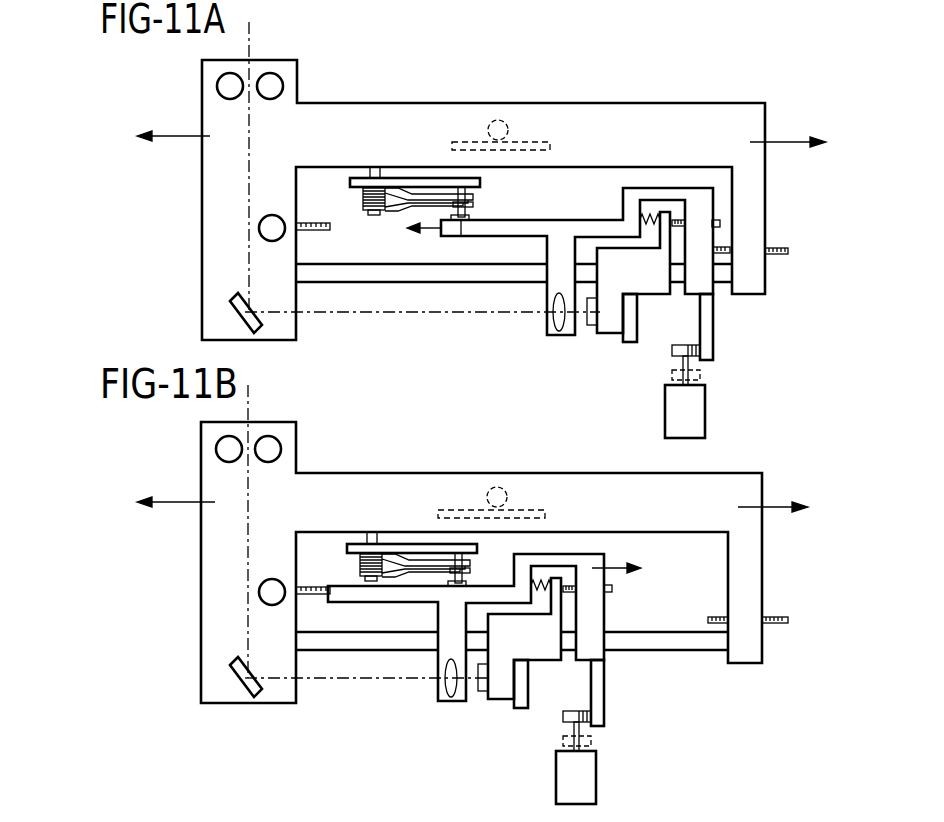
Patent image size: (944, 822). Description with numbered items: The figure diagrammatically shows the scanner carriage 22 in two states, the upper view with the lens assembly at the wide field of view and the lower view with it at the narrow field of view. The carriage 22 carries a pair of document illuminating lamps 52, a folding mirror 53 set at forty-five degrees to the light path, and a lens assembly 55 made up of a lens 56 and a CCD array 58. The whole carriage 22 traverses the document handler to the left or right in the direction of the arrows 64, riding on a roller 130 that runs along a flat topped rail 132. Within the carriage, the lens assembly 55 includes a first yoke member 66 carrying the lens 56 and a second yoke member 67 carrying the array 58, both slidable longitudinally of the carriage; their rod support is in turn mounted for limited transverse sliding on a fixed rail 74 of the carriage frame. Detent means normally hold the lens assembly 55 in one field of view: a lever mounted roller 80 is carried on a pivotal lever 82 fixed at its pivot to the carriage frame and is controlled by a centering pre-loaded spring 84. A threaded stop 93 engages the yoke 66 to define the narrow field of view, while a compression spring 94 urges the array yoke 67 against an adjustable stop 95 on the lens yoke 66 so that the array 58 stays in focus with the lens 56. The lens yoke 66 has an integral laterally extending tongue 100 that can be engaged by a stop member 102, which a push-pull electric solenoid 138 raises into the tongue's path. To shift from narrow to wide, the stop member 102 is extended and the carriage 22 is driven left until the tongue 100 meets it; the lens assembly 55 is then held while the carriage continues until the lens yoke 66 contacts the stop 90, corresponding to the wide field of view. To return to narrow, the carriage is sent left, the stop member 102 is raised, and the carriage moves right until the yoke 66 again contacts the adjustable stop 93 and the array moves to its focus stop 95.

In FIG. 11A, the carriage 22 is at (450, 91).
In FIG. 11B, the carriage 22 is at (412, 461).
In FIG. 11A, the document illuminating lamps 52 is at (218, 87).
In FIG. 11B, the document illuminating lamps 52 is at (217, 449).
In FIG. 11A, the folding mirror 53 is at (236, 318).
In FIG. 11B, the folding mirror 53 is at (241, 690).
In FIG. 11A, the lens assembly 55 is at (537, 329).
In FIG. 11B, the lens assembly 55 is at (424, 708).
In FIG. 11A, the lens 56 is at (556, 330).
In FIG. 11B, the lens 56 is at (449, 698).
In FIG. 11A, the CCD array 58 is at (631, 343).
In FIG. 11B, the CCD array 58 is at (521, 712).
In FIG. 11A, the arrows 64 is at (192, 139).
In FIG. 11B, the arrows 64 is at (186, 503).
In FIG. 11A, the first yoke member 66 is at (562, 240).
In FIG. 11B, the first yoke member 66 is at (483, 596).
In FIG. 11A, the second yoke member 67 is at (608, 333).
In FIG. 11B, the second yoke member 67 is at (497, 700).
In FIG. 11A, the fixed rail 74 is at (262, 229).
In FIG. 11B, the fixed rail 74 is at (262, 594).
In FIG. 11A, the lever mounted roller 80 is at (459, 231).
In FIG. 11B, the lever mounted roller 80 is at (460, 591).
In FIG. 11A, the pivotal lever 82 is at (426, 180).
In FIG. 11B, the pivotal lever 82 is at (420, 545).
In FIG. 11A, the centering pre-loaded spring 84 is at (358, 203).
In FIG. 11B, the centering pre-loaded spring 84 is at (356, 569).
In FIG. 11A, the stop 90 is at (771, 255).
In FIG. 11B, the stop 90 is at (777, 625).
In FIG. 11A, the threaded stop 93 is at (317, 232).
In FIG. 11B, the threaded stop 93 is at (309, 595).
In FIG. 11A, the compression spring 94 is at (651, 214).
In FIG. 11B, the compression spring 94 is at (541, 580).
In FIG. 11A, the adjustable stop 95 is at (721, 224).
In FIG. 11B, the adjustable stop 95 is at (613, 589).
In FIG. 11A, the tongue 100 is at (707, 312).
In FIG. 11B, the tongue 100 is at (596, 690).
In FIG. 11A, the stop member 102 is at (675, 347).
In FIG. 11B, the stop member 102 is at (571, 711).
In FIG. 11A, the roller 130 is at (500, 119).
In FIG. 11B, the roller 130 is at (496, 486).
In FIG. 11A, the flat topped rail 132 is at (537, 143).
In FIG. 11B, the flat topped rail 132 is at (535, 510).
In FIG. 11A, the push-pull electric solenoid 138 is at (700, 415).
In FIG. 11B, the push-pull electric solenoid 138 is at (586, 773).